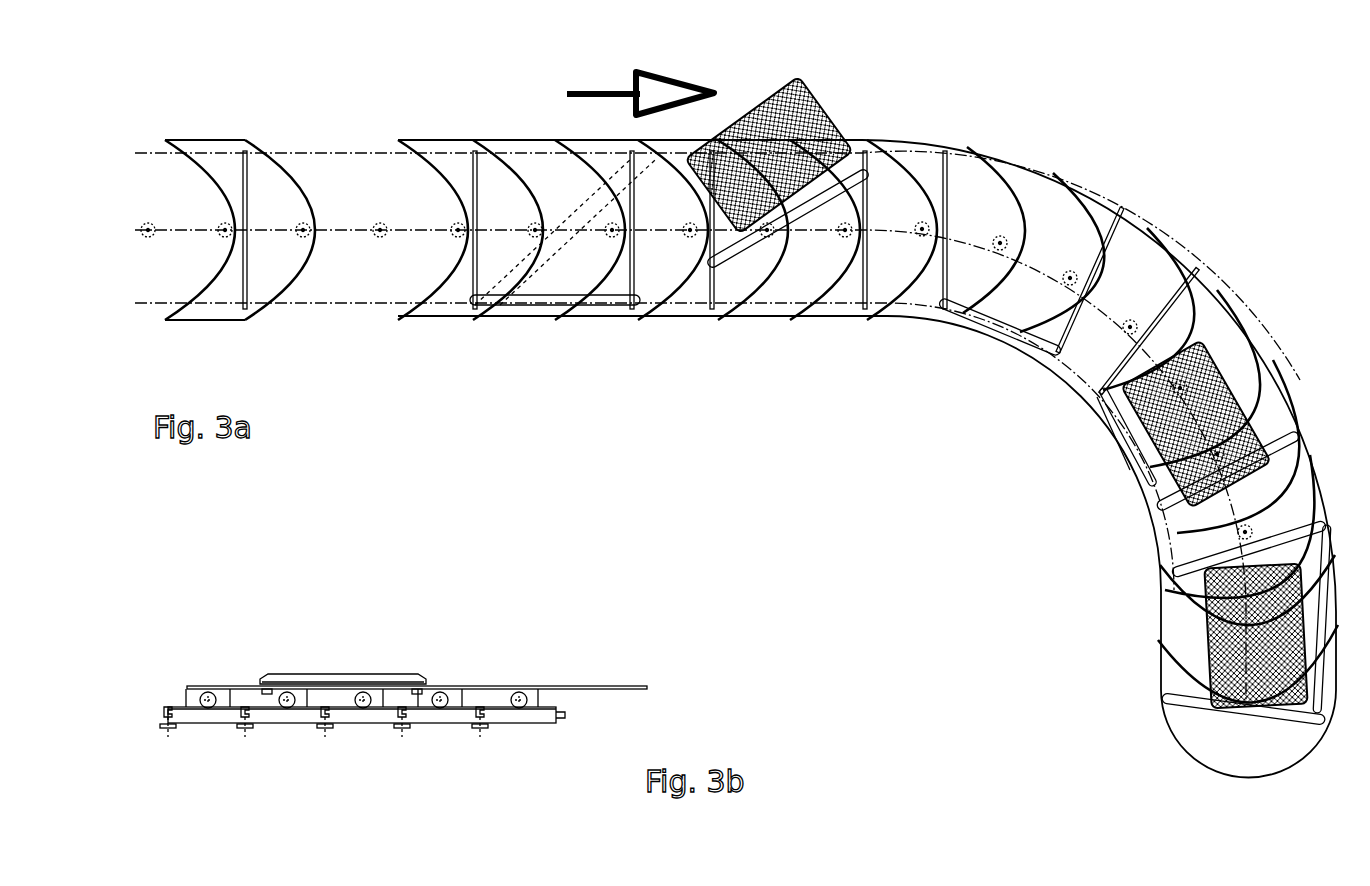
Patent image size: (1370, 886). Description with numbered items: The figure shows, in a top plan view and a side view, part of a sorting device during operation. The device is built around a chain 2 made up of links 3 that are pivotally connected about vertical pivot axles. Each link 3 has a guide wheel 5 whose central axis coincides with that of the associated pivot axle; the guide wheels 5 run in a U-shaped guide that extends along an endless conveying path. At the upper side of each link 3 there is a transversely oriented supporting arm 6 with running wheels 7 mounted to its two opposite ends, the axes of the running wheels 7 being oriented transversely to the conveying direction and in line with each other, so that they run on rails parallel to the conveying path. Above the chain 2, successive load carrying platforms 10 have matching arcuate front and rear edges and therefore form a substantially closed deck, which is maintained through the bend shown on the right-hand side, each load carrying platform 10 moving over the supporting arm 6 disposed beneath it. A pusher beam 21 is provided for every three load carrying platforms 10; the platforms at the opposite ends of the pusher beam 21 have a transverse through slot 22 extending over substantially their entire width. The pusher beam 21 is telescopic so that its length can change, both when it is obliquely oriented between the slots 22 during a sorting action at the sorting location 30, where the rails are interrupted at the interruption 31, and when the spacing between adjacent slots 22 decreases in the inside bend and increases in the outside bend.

In FIG. 3A, the chain 2 is at (413, 232).
In FIG. 3A, the pusher beam 21 is at (810, 215).
In FIG. 3B, the pusher beam 21 is at (340, 682).
In FIG. 3A, the through slot 22 is at (718, 288).
In FIG. 3A, the sorting location 30 is at (809, 71).
In FIG. 3A, the interruption 31 is at (815, 110).
In FIG. 3B, the link 3 is at (290, 719).
In FIG. 3B, the guide wheel 5 is at (326, 727).
In FIG. 3B, the supporting arm 6 is at (297, 692).
In FIG. 3B, the running wheel 7 is at (216, 700).
In FIG. 3B, the load carrying platform 10 is at (460, 689).